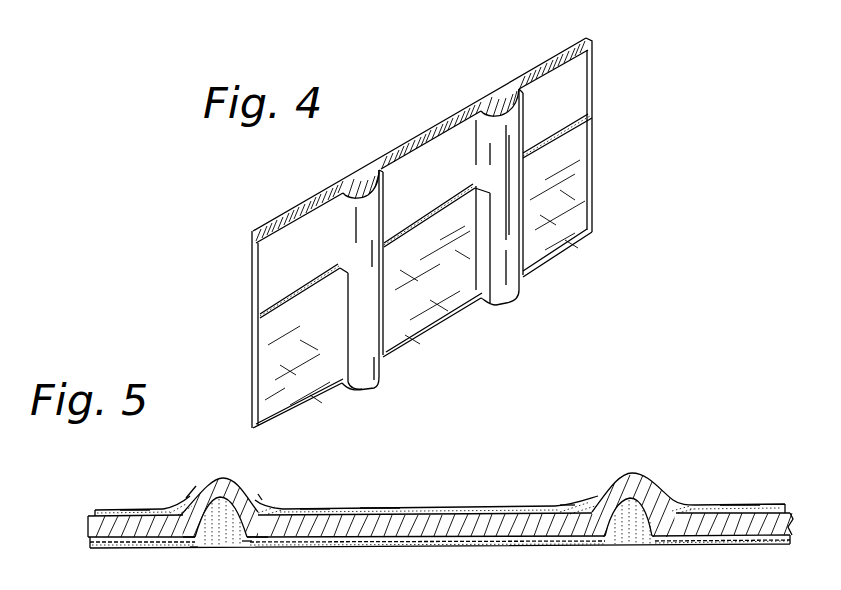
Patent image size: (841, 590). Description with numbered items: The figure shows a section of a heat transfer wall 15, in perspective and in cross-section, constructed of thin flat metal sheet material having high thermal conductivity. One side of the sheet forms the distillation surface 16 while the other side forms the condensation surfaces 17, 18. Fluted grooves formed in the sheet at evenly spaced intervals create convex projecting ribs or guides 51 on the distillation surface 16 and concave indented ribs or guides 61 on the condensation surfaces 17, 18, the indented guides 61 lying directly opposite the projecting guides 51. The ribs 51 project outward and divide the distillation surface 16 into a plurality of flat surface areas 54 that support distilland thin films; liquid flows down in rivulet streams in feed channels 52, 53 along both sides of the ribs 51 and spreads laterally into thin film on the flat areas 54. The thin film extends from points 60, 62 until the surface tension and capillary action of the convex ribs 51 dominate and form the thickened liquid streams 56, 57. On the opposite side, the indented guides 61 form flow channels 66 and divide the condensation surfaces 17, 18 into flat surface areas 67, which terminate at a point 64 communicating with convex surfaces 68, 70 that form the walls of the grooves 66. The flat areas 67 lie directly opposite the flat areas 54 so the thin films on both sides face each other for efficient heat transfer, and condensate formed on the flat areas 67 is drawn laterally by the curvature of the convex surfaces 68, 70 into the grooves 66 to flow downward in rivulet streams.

In FIG. 4, the wall 15 is at (430, 126).
In FIG. 5, the wall 15 is at (363, 530).
In FIG. 4, the distillation surface 16 is at (552, 58).
In FIG. 5, the distillation surface 16 is at (415, 511).
In FIG. 4, the condensation surface 17 is at (298, 199).
In FIG. 5, the condensation surface 17 is at (440, 559).
In FIG. 4, the condensation surface 18 is at (308, 198).
In FIG. 5, the condensation surface 18 is at (418, 537).
In FIG. 4, the convex projecting rib 51 is at (373, 218).
In FIG. 5, the convex projecting rib 51 is at (223, 478).
In FIG. 4, the feed channel 52 is at (347, 246).
In FIG. 5, the feed channel 52 is at (181, 505).
In FIG. 4, the feed channel 53 is at (380, 171).
In FIG. 5, the feed channel 53 is at (266, 505).
In FIG. 4, the flat surface area 54 is at (306, 268).
In FIG. 5, the flat surface area 54 is at (130, 511).
In FIG. 4, the thickened liquid stream 56 is at (341, 277).
In FIG. 5, the thickened liquid stream 56 is at (186, 498).
In FIG. 5, the thickened liquid stream 57 is at (260, 497).
In FIG. 5, the point 60 is at (310, 500).
In FIG. 4, the concave indented rib 61 is at (361, 167).
In FIG. 5, the concave indented rib 61 is at (230, 518).
In FIG. 5, the point 62 is at (568, 505).
In FIG. 5, the point 64 is at (187, 538).
In FIG. 5, the flow channel 66 is at (222, 523).
In FIG. 5, the flat surface area 67 is at (138, 540).
In FIG. 5, the convex surface 68 is at (190, 547).
In FIG. 5, the convex surface 70 is at (247, 540).